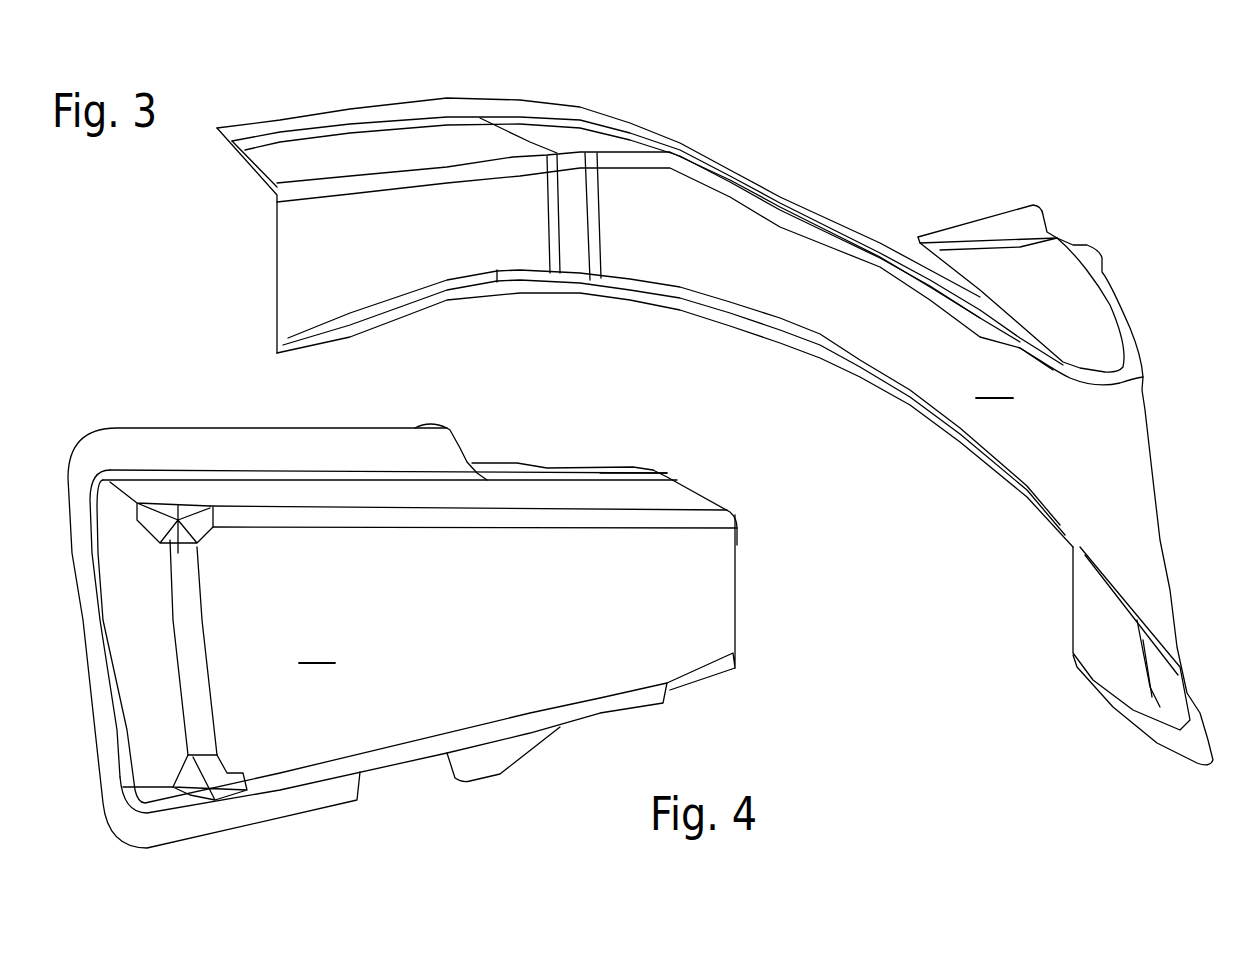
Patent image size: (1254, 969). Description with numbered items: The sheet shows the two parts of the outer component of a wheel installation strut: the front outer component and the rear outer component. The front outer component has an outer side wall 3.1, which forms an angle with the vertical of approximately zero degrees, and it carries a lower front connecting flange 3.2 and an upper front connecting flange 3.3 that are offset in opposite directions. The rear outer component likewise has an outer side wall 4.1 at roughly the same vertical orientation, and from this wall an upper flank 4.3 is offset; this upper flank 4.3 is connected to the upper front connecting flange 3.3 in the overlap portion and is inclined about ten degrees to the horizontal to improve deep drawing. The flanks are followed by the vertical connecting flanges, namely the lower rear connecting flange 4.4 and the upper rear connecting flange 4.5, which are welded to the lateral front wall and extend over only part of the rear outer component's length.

In FIG. 3, the outer side wall 3.1 is at (715, 431).
In FIG. 3, the lower front connecting flange 3.2 is at (387, 310).
In FIG. 3, the upper front connecting flange 3.3 is at (670, 147).
In FIG. 4, the outer side wall 4.1 is at (413, 636).
In FIG. 4, the upper flank 4.3 is at (667, 492).
In FIG. 4, the lower rear connecting flange 4.4 is at (343, 792).
In FIG. 4, the upper rear connecting flange 4.5 is at (440, 455).